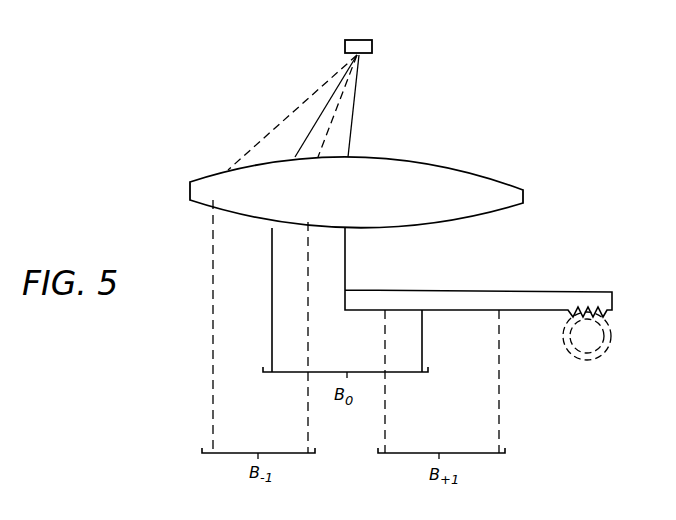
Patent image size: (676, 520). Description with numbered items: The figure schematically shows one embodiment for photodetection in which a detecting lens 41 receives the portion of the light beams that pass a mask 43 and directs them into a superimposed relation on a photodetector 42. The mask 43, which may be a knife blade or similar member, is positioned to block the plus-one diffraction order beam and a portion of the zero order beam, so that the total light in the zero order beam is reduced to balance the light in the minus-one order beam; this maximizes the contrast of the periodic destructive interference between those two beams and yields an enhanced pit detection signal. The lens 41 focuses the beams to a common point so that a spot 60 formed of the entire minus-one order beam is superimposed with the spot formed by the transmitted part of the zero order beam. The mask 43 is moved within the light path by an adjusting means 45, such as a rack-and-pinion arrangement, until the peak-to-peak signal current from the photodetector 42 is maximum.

The detecting lens 41 is at (446, 168).
The photodetector 42 is at (375, 43).
The mask 43 is at (541, 292).
The adjusting means 45 is at (562, 356).
The spot 60 is at (315, 112).